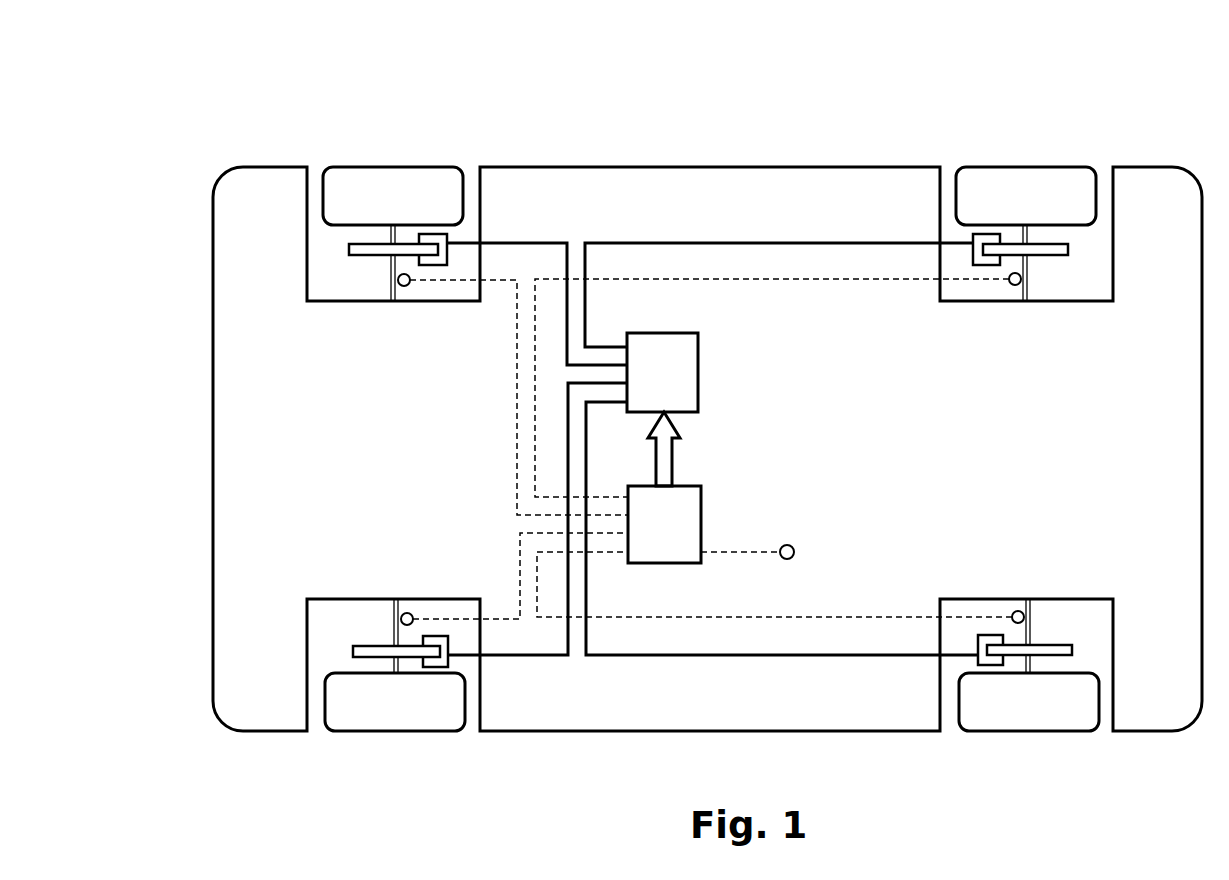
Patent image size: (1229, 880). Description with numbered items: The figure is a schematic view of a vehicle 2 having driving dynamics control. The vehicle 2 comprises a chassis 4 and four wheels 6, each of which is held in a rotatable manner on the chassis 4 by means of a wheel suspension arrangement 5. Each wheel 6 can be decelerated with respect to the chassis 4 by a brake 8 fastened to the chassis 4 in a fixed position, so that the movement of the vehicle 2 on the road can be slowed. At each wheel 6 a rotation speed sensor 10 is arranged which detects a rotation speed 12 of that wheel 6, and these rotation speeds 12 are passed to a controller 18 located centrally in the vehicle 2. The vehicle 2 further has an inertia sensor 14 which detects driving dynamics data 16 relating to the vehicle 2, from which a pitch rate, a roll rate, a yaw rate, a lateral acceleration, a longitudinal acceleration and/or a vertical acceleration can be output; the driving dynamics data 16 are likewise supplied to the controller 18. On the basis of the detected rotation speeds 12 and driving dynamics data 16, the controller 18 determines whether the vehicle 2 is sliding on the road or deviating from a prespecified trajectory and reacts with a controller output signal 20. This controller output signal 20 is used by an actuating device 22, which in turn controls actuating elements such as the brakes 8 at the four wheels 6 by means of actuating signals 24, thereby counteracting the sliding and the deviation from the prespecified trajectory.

The vehicle 2 is at (218, 128).
The chassis 4 is at (697, 165).
The wheel suspension arrangement 5 is at (393, 303).
The wheel 6 is at (400, 165).
The brake 8 is at (367, 258).
The rotation speed sensor 10 is at (404, 287).
The rotation speed 12 is at (500, 283).
The inertia sensor 14 is at (794, 552).
The driving dynamics data 16 is at (735, 555).
The controller 18 is at (701, 512).
The controller output signal 20 is at (672, 460).
The actuating device 22 is at (698, 350).
The actuating signal 24 is at (541, 241).